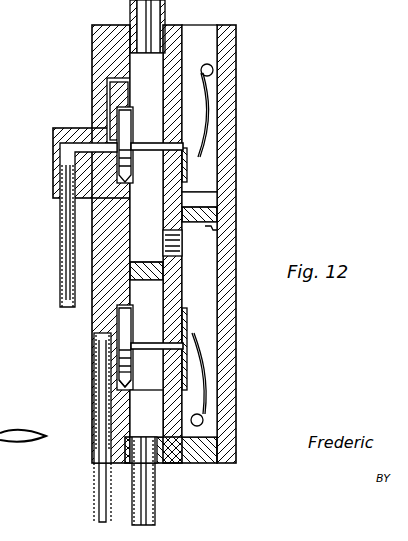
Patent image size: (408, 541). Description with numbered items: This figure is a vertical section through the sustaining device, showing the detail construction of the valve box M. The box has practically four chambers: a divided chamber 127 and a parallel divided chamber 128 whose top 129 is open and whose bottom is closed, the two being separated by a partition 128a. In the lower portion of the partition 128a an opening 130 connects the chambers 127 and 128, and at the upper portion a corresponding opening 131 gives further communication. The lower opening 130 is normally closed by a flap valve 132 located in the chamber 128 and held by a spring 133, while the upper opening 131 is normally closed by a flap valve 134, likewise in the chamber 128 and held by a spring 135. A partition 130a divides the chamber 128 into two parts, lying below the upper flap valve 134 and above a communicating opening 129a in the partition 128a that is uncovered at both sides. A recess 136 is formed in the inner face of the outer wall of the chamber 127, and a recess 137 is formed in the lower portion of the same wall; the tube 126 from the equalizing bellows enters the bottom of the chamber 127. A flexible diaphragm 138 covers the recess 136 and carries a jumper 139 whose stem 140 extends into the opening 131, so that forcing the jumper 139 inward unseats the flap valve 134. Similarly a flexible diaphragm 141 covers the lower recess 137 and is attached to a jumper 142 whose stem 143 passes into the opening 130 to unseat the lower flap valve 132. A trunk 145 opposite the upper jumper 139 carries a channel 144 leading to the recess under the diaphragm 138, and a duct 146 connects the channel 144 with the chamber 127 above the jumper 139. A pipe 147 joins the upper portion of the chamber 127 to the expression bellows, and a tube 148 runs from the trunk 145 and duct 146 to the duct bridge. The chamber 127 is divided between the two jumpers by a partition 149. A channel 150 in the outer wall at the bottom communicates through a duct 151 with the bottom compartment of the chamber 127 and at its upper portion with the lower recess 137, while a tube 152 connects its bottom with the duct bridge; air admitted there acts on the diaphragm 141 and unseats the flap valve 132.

The tube 126 is at (158, 511).
The divided chamber 127 is at (147, 358).
The divided chamber 128 is at (199, 261).
The partition 128a is at (166, 413).
The top of chamber 129 is at (208, 30).
The communicating opening 129a is at (201, 329).
The lower opening 130 is at (141, 379).
The partition 130a is at (213, 229).
The upper opening 131 is at (175, 143).
The flap valve 132 is at (192, 333).
The spring 133 is at (205, 374).
The flap valve 134 is at (199, 207).
The spring 135 is at (220, 80).
The recess 136 is at (111, 244).
The recess 137 is at (98, 336).
The diaphragm 138 is at (130, 196).
The jumper 139 is at (133, 127).
The stem 140 is at (155, 151).
The diaphragm 141 is at (124, 300).
The jumper 142 is at (157, 337).
The stem 143 is at (140, 363).
The channel 144 is at (75, 153).
The trunk 145 is at (60, 179).
The channel or duct 146 is at (108, 101).
The pipe or tube 147 is at (136, 8).
The tube 148 is at (62, 267).
The partition 149 is at (161, 245).
The channel 150 is at (102, 378).
The duct 151 is at (115, 416).
The tube 152 is at (96, 498).
The valve box M is at (238, 178).